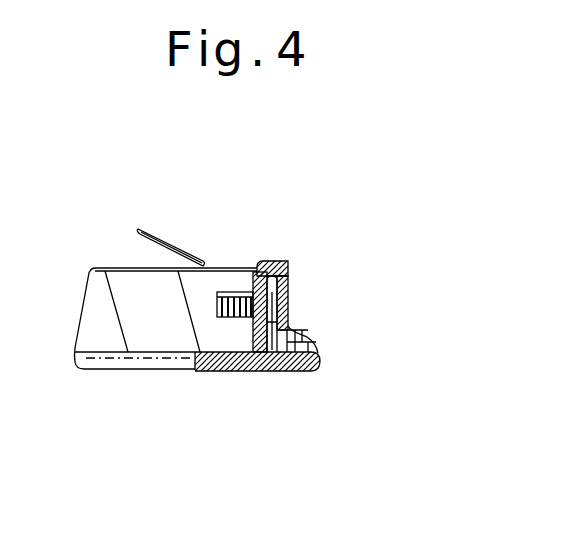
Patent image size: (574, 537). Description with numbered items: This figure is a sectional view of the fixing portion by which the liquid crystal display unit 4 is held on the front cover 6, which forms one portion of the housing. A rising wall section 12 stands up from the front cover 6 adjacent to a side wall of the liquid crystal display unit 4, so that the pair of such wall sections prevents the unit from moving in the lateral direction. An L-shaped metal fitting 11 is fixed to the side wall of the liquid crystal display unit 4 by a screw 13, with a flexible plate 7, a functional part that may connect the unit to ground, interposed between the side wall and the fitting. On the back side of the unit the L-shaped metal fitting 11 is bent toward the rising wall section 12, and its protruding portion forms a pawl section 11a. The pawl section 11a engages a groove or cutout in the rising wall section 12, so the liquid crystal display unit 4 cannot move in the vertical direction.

The liquid crystal display unit 4 is at (118, 290).
The flexible plate 7 is at (225, 266).
The front cover 6 is at (265, 372).
The L-shaped metal fitting 11 is at (265, 263).
The pawl section 11a is at (292, 266).
The screw 13 is at (288, 273).
The rising wall section 12 is at (287, 303).